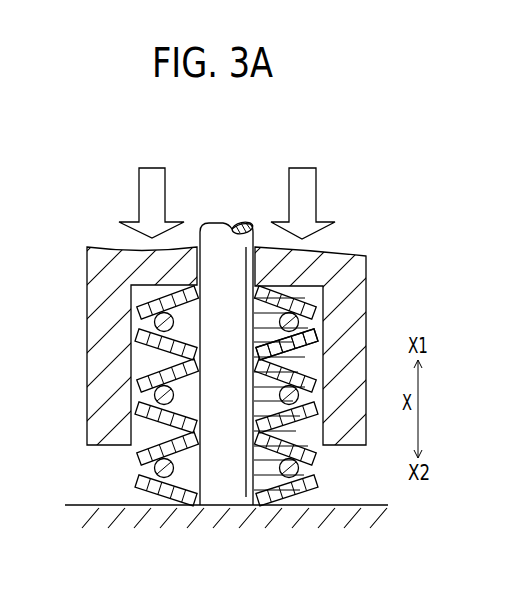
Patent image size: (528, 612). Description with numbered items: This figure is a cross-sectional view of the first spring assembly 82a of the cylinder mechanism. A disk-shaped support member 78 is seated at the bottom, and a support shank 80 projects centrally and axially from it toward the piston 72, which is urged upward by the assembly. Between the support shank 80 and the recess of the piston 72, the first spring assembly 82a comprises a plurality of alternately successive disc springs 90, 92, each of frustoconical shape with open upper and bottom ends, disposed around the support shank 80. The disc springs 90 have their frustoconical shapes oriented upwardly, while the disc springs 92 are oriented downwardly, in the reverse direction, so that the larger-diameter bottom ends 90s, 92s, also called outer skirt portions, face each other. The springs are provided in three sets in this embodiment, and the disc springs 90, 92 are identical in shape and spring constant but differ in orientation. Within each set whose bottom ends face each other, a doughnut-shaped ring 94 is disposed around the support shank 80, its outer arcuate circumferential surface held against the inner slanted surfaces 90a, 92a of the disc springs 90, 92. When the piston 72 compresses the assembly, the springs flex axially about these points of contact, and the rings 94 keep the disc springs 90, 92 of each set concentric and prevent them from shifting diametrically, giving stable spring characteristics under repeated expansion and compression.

The piston 72 is at (97, 264).
The support member 78 is at (293, 512).
The support shank 80 is at (227, 480).
The first spring assembly 82a is at (362, 140).
The disc spring 90 is at (136, 307).
The inner slanted surface 90a is at (136, 335).
The larger-diameter bottom end 90s is at (330, 342).
The disc spring 92 is at (152, 349).
The inner slanted surface 92a is at (163, 478).
The larger-diameter bottom end 92s is at (330, 342).
The ring 94 is at (137, 407).